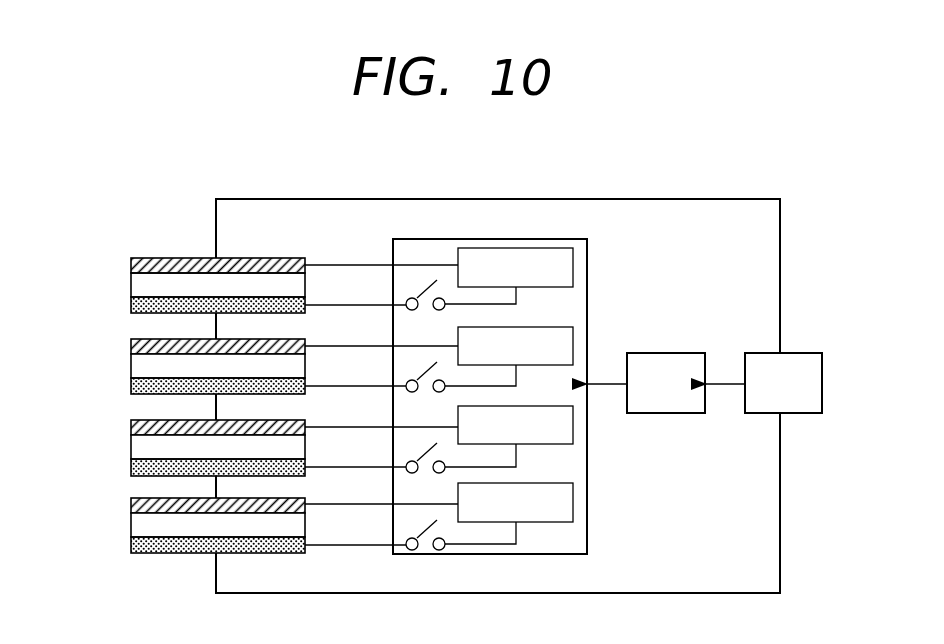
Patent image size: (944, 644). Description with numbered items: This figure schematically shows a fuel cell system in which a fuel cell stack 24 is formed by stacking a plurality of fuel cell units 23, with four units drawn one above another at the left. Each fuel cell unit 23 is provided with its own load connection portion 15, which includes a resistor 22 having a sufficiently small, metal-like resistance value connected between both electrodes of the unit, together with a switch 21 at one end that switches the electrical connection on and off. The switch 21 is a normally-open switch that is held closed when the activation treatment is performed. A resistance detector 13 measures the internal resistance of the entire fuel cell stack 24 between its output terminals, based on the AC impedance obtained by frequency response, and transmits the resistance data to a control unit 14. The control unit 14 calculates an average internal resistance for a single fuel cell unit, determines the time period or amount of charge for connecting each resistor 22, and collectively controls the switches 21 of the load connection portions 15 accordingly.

The resistance detector 13 is at (808, 354).
The control unit 14 is at (663, 354).
The load connection portion 15 is at (549, 239).
The switch 21 is at (421, 282).
The resistor 22 is at (439, 396).
The fuel cell unit 23 is at (218, 228).
The fuel cell stack 24 is at (176, 368).